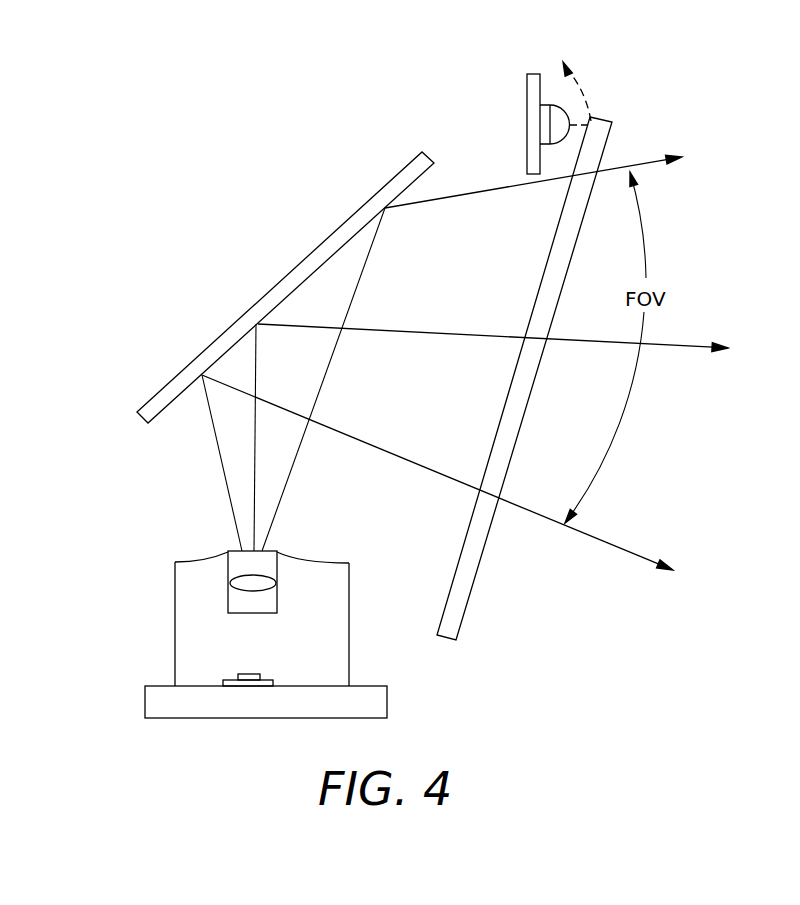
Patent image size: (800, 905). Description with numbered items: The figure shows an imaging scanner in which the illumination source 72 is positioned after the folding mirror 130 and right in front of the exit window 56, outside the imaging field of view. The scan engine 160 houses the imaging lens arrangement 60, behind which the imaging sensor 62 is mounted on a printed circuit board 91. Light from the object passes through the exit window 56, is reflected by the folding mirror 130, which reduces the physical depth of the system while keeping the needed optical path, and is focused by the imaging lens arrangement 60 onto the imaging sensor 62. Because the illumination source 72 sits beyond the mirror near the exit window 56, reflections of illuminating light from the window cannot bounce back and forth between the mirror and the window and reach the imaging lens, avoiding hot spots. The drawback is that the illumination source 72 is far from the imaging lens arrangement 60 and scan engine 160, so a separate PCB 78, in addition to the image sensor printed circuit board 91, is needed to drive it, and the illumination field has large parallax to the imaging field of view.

The folding mirror 130 is at (392, 179).
The exit window 56 is at (614, 129).
The PCB 78 is at (527, 125).
The illumination source 72 is at (566, 112).
The scan engine 160 is at (349, 625).
The imaging lens arrangement 60 is at (228, 602).
The imaging sensor 62 is at (230, 680).
The printed circuit board 91 is at (145, 703).